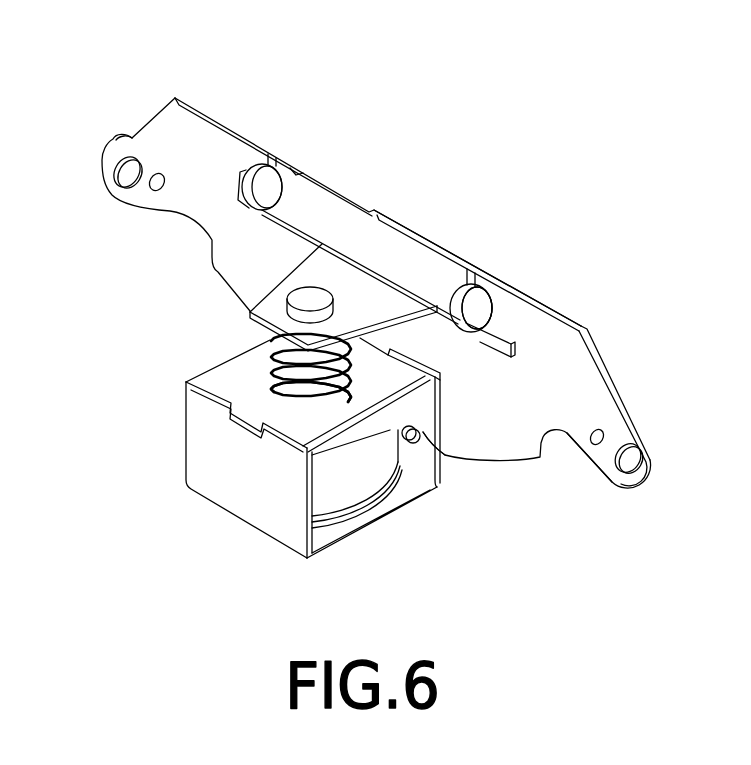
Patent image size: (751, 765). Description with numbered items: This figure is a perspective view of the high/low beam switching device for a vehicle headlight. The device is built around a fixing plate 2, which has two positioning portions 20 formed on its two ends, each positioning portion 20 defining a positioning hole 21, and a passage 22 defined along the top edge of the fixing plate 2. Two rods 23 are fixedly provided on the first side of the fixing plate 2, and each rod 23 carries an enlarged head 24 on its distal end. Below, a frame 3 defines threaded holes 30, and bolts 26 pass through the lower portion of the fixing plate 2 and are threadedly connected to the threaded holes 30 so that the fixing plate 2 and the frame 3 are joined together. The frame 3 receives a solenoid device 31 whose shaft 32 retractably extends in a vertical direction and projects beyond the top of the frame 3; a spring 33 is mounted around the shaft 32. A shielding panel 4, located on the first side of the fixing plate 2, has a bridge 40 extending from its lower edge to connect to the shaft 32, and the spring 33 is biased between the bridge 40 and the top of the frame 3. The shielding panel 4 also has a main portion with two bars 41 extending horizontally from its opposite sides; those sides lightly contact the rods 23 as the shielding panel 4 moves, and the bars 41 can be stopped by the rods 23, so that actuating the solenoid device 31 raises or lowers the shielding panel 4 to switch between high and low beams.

The fixing plate 2 is at (207, 111).
The frame 3 is at (240, 523).
The shielding panel 4 is at (334, 192).
The positioning portion 20 is at (656, 463).
The positioning hole 21 is at (631, 466).
The passage 22 is at (410, 225).
The rod 23 is at (485, 312).
The enlarged head 24 is at (259, 186).
The bolt 26 is at (415, 444).
The threaded hole 30 is at (445, 451).
The solenoid device 31 is at (357, 494).
The shaft 32 is at (282, 388).
The spring 33 is at (294, 366).
The bridge 40 is at (303, 278).
The bar 41 is at (507, 345).